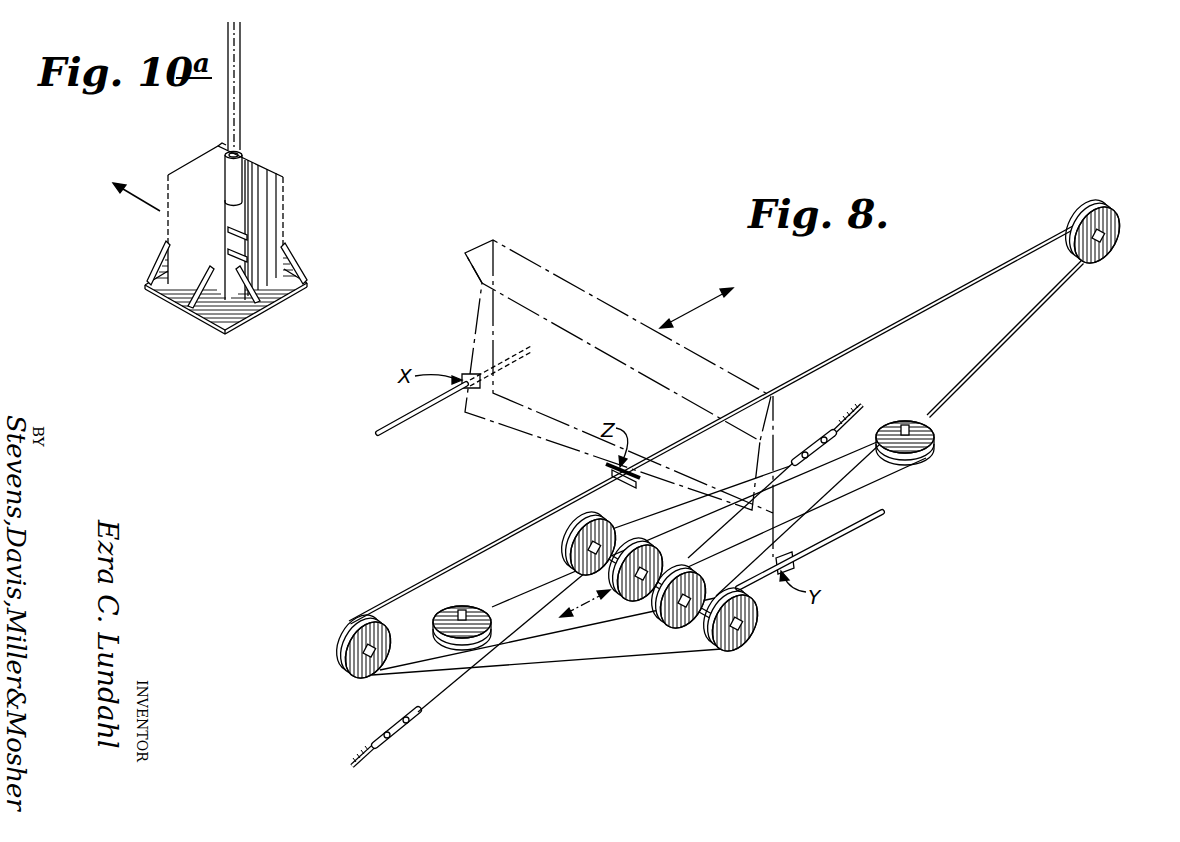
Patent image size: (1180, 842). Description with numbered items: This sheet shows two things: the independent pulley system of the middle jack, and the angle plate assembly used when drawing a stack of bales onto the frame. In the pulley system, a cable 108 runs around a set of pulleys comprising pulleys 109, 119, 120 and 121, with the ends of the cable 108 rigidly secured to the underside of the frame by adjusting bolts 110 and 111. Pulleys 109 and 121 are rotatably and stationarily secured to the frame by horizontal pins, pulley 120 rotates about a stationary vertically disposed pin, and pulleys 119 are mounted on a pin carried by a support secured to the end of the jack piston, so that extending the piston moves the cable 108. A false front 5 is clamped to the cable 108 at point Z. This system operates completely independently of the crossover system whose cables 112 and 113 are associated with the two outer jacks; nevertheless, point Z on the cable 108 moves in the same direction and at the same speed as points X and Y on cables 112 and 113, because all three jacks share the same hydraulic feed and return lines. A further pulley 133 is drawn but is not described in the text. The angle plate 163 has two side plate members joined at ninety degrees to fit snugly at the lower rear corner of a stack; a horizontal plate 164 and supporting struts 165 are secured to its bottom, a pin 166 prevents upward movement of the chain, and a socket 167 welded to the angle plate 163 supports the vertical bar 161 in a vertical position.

In FIG. 8, the false front 5 is at (537, 280).
In FIG. 8, the cable 108 is at (997, 349).
In FIG. 8, the pulley 109 is at (342, 655).
In FIG. 8, the adjusting bolt 110 is at (352, 758).
In FIG. 8, the adjusting bolt 111 is at (838, 422).
In FIG. 8, the cable 112 is at (395, 432).
In FIG. 8, the cable 113 is at (850, 540).
In FIG. 8, the pulleys 119 is at (735, 652).
In FIG. 8, the pulley 120 is at (937, 434).
In FIG. 8, the pulley 121 is at (1100, 262).
In FIG. 8, the horizontal idler pulley 133 is at (446, 612).
In FIG. 10A, the vertical bar 161 is at (241, 58).
In FIG. 10A, the angle plate 163 is at (192, 160).
In FIG. 10A, the horizontal plate 164 is at (222, 313).
In FIG. 10A, the supporting struts 165 is at (147, 271).
In FIG. 10A, the pin 166 is at (247, 260).
In FIG. 10A, the socket 167 is at (238, 172).